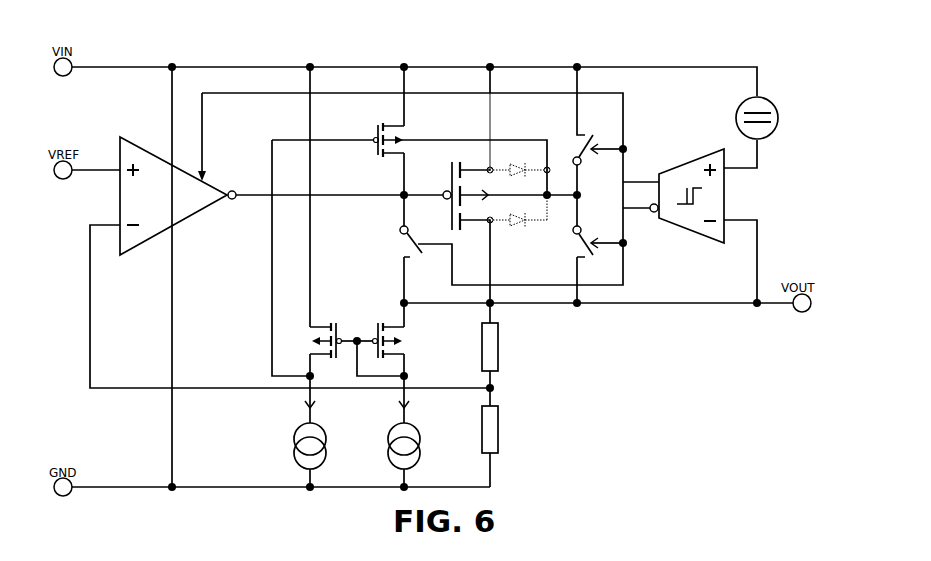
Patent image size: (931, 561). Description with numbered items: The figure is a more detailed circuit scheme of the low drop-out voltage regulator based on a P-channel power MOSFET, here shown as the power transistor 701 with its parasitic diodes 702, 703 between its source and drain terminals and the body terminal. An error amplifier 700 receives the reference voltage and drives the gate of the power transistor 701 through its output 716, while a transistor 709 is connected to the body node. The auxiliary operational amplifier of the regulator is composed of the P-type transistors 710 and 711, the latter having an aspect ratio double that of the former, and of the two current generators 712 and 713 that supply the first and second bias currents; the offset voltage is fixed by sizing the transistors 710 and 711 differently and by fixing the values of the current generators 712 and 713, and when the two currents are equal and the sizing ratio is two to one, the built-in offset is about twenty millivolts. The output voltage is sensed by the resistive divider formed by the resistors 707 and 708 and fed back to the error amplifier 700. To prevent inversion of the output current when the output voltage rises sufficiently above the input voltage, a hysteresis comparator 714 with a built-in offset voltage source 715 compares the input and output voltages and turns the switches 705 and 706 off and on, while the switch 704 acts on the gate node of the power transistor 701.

The operational amplifier 700 is at (173, 178).
The power transistor 701 is at (487, 195).
The parasitic diode 702 is at (518, 160).
The parasitic diode 703 is at (517, 225).
The switch 704 is at (399, 239).
The switch 705 is at (598, 142).
The switch 706 is at (598, 234).
The resistor R1 707 is at (506, 347).
The resistor R2 708 is at (488, 429).
The transistor 709 is at (385, 131).
The P-type transistor 710 is at (322, 332).
The P-type transistor 711 is at (411, 332).
The current generator 712 is at (295, 434).
The current generator 713 is at (389, 434).
The hysteresis comparator 714 is at (687, 201).
The offset voltage source 715 is at (784, 126).
The output of operational amplifier 716 is at (216, 137).